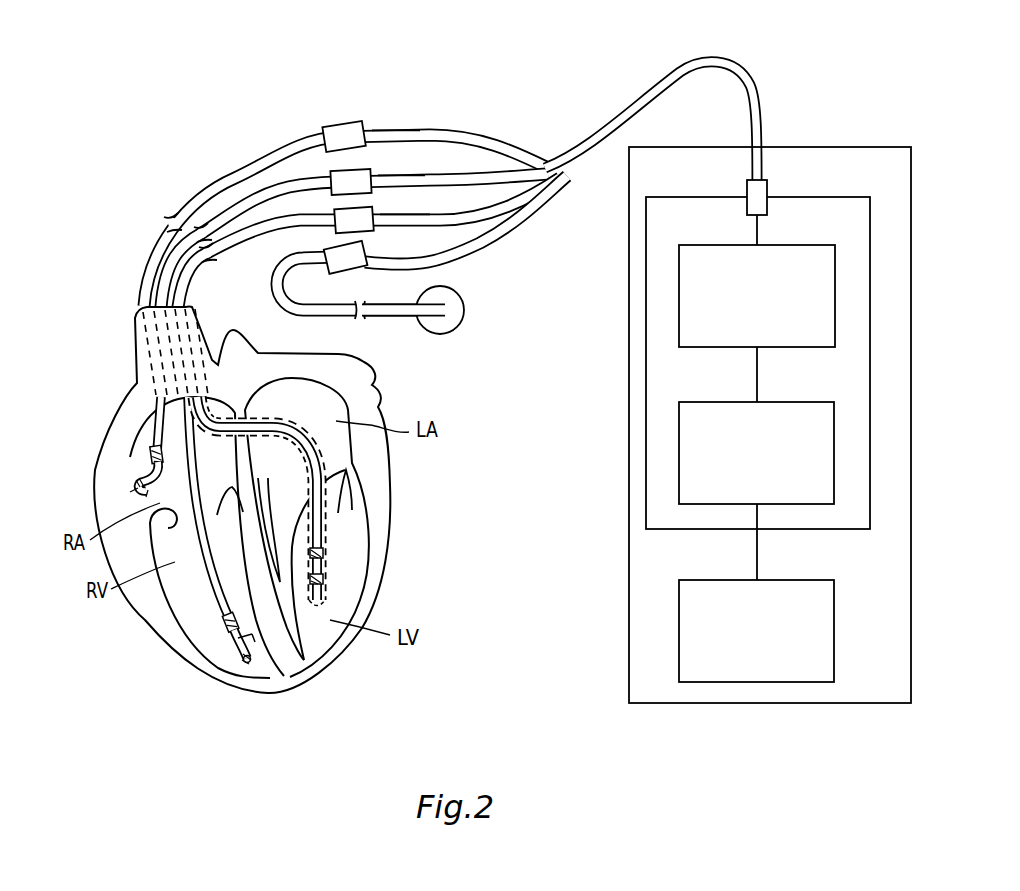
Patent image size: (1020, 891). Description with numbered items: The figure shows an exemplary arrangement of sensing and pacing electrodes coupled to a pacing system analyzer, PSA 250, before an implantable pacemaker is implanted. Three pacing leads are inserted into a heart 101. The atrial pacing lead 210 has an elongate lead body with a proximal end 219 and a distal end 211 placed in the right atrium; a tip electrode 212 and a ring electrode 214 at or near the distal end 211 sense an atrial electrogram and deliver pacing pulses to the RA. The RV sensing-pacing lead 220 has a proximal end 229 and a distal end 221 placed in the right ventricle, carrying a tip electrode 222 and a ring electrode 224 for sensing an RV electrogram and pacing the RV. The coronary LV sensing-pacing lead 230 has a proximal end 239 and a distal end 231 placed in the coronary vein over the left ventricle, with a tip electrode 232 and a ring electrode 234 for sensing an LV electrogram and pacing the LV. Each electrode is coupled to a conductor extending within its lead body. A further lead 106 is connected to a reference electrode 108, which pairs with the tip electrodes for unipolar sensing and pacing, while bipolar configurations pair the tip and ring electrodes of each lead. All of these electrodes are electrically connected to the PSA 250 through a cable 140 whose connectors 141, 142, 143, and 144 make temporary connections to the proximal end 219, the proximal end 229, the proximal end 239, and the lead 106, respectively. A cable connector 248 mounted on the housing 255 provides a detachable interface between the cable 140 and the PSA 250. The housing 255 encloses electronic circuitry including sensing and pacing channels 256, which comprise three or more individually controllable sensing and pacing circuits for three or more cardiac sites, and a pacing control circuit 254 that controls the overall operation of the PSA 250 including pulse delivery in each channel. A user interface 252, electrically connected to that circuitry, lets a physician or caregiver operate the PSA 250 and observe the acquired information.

The heart 101 is at (394, 497).
The lead 106 is at (277, 274).
The reference electrode 108 is at (466, 310).
The cable 140 is at (700, 61).
The connector 141 is at (344, 125).
The connector 142 is at (352, 172).
The connector 143 is at (371, 215).
The connector 144 is at (364, 252).
The atrial pacing lead 210 is at (256, 161).
The distal end 211 is at (148, 493).
The tip electrode 212 is at (140, 490).
The ring electrode 214 is at (150, 455).
The proximal end 219 is at (324, 134).
The RV sensing-pacing lead 220 is at (221, 218).
The distal end 221 is at (249, 666).
The tip electrode 222 is at (243, 657).
The ring electrode 224 is at (222, 630).
The proximal end 229 is at (334, 178).
The coronary LV sensing-pacing lead 230 is at (301, 226).
The distal end 231 is at (338, 646).
The tip electrode 232 is at (324, 579).
The ring electrode 234 is at (324, 553).
The proximal end 239 is at (333, 213).
The cable connector 248 is at (767, 182).
The PSA 250 is at (895, 146).
The user interface 252 is at (818, 580).
The pacing control circuit 254 is at (818, 402).
The housing 255 is at (853, 197).
The sensing and pacing channels 256 is at (818, 245).